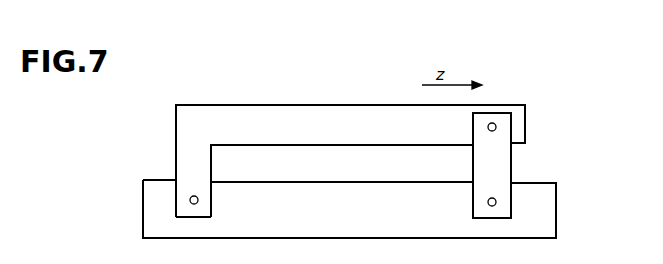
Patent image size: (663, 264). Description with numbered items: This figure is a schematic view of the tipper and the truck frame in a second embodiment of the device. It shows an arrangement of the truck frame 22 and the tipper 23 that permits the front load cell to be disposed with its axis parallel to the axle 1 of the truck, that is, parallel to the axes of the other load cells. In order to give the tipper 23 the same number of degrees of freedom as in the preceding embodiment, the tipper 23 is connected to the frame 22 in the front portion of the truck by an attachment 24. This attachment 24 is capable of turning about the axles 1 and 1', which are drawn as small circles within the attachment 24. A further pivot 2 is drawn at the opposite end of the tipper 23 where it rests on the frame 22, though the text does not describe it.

The tipper 23 is at (310, 122).
The truck frame 22 is at (349, 202).
The attachment 24 is at (502, 163).
The axle 1 is at (536, 206).
The axle 1' is at (520, 106).
The pivot point 2 is at (191, 197).